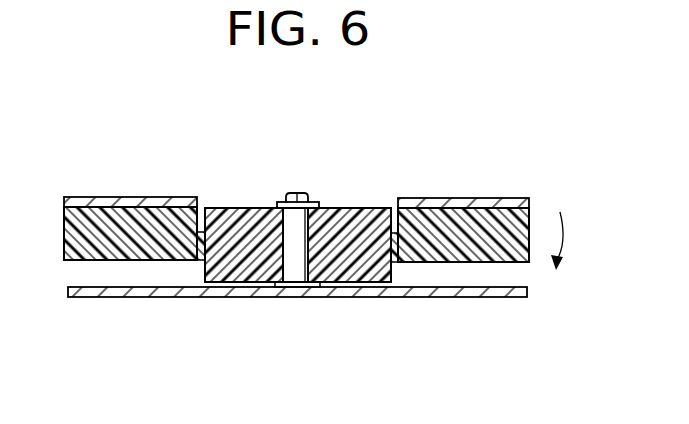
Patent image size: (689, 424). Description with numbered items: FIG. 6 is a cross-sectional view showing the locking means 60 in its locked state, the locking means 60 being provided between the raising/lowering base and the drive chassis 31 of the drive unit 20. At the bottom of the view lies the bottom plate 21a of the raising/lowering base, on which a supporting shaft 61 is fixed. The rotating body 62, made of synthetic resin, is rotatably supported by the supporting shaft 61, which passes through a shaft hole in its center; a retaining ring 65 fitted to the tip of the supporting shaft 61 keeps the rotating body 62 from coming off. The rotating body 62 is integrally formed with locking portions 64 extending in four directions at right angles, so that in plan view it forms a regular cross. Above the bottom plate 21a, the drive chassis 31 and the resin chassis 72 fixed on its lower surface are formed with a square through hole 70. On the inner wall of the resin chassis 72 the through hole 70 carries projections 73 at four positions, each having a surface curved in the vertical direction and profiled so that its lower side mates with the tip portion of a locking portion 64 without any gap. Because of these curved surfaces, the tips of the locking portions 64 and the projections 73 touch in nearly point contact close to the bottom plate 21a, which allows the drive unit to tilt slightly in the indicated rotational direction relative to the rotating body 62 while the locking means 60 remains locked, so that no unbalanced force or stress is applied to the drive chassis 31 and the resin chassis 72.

The disk drive unit 20 is at (555, 165).
The bottom plate 21a is at (147, 297).
The drive chassis 31 is at (140, 197).
The locking means 60 is at (443, 174).
The supporting shaft 61 is at (301, 268).
The rotating body 62 is at (400, 240).
The locking portions 64 is at (243, 230).
The retaining ring 65 is at (305, 192).
The through hole 70 is at (208, 178).
The resin chassis 72 is at (102, 262).
The projections 73 is at (201, 230).